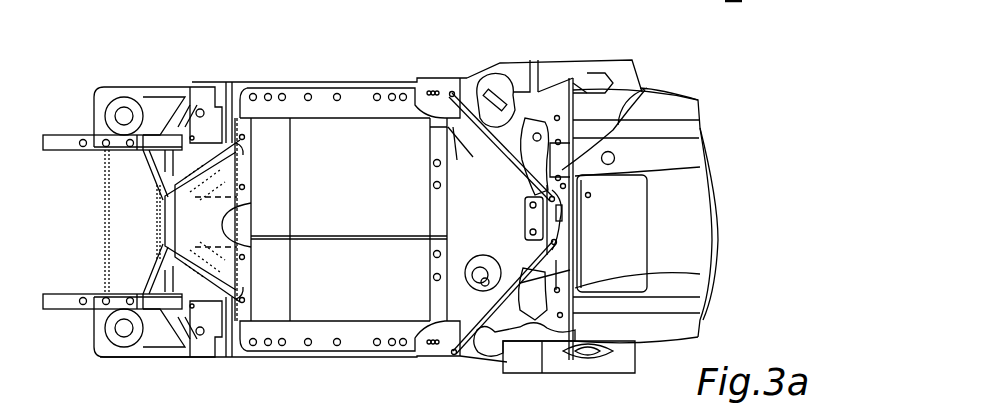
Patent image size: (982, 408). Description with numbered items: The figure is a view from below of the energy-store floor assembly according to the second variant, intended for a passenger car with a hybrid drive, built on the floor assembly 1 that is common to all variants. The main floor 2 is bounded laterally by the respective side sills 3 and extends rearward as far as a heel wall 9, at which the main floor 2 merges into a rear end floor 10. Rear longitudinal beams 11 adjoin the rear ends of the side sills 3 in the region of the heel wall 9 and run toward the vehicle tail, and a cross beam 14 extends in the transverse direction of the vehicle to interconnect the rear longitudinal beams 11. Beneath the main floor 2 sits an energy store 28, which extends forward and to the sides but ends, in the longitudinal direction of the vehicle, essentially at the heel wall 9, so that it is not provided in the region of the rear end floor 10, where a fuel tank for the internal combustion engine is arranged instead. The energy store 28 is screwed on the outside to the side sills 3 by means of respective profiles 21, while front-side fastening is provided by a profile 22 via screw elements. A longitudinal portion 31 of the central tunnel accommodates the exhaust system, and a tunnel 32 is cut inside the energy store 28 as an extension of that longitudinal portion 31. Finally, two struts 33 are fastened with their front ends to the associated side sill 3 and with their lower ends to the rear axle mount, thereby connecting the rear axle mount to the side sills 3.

The floor assembly 1 is at (778, 88).
The main floor 2 is at (330, 64).
The side sills 3 is at (268, 88).
The heel wall 9 is at (478, 78).
The rear end floor 10 is at (503, 193).
The rear longitudinal beams 11 is at (507, 120).
The cross beam 14 is at (650, 92).
The profiles 21 is at (357, 103).
The profile 22 is at (243, 123).
The energy store 28 is at (352, 304).
The longitudinal portion 31 is at (210, 226).
The tunnel 32 is at (378, 231).
The struts 33 is at (700, 167).